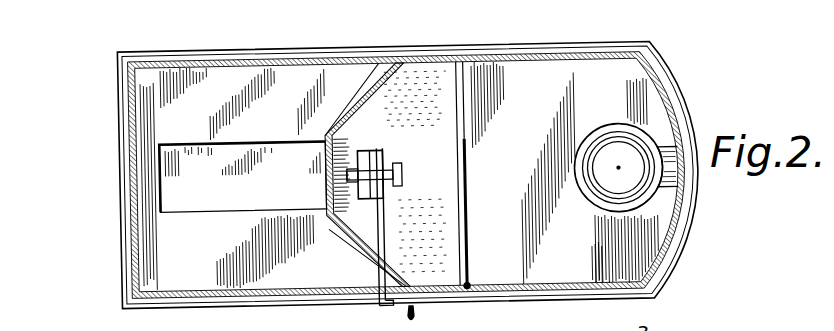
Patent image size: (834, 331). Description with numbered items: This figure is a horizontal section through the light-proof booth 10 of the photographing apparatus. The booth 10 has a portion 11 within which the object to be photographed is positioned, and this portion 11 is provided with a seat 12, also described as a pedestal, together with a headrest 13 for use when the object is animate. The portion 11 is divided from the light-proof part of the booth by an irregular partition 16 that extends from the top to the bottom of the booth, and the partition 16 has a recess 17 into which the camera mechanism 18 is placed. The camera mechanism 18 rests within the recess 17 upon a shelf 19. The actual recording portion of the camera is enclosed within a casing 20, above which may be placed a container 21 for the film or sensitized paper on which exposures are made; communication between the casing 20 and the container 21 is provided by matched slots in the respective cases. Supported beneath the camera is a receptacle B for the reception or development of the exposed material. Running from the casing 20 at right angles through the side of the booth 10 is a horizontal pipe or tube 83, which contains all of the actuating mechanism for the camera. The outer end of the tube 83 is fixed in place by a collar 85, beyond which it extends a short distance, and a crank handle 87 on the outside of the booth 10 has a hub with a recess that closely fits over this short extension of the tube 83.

The light-proof booth 10 is at (133, 216).
The portion of booth 11 is at (565, 172).
The seat 12 is at (604, 151).
The headrest 13 is at (633, 206).
The irregular partition 16 is at (467, 241).
The recess 17 is at (424, 134).
The camera mechanism 18 is at (386, 190).
The shelf 19 is at (448, 177).
The casing 20 is at (358, 198).
The container 21 is at (332, 142).
The horizontal pipe or tube 83 is at (385, 244).
The collar 85 is at (380, 301).
The crank handle 87 is at (414, 318).
The receptacle B is at (243, 177).